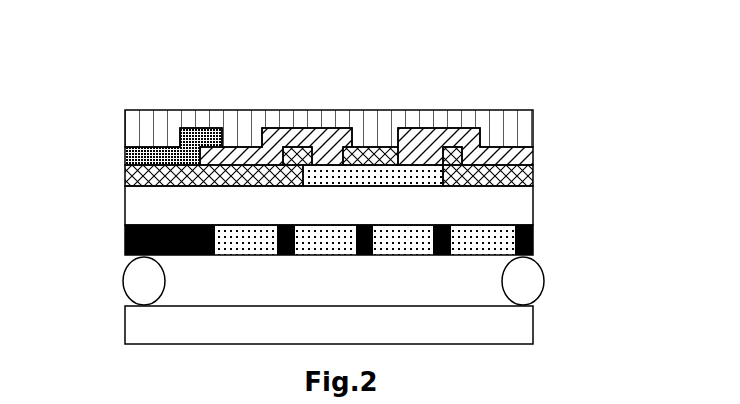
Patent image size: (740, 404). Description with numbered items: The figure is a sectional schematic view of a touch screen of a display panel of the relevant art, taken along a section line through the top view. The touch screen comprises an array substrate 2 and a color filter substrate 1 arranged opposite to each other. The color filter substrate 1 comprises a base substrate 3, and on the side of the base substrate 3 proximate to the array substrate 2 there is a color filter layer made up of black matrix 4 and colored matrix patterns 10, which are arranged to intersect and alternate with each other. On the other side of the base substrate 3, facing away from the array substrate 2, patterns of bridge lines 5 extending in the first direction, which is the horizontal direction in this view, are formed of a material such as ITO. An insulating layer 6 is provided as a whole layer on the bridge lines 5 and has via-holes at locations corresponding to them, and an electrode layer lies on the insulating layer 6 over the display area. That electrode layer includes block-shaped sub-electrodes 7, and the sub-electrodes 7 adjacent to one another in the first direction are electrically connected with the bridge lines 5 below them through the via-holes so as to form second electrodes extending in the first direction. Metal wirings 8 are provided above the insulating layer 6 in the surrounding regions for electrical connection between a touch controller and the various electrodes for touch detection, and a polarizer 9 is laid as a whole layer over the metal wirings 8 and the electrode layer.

The color filter substrate 1 is at (563, 158).
The array substrate 2 is at (567, 325).
The base substrate 3 is at (130, 203).
The black matrix 4 is at (128, 235).
The bridge lines 5 is at (432, 165).
The insulating layer 6 is at (130, 174).
The sub-electrodes 7 is at (416, 137).
The metal wirings 8 is at (125, 155).
The polarizer 9 is at (130, 128).
The colored matrix patterns 10 is at (478, 238).